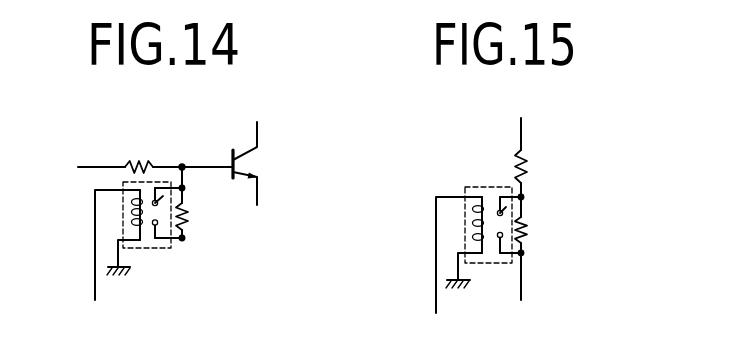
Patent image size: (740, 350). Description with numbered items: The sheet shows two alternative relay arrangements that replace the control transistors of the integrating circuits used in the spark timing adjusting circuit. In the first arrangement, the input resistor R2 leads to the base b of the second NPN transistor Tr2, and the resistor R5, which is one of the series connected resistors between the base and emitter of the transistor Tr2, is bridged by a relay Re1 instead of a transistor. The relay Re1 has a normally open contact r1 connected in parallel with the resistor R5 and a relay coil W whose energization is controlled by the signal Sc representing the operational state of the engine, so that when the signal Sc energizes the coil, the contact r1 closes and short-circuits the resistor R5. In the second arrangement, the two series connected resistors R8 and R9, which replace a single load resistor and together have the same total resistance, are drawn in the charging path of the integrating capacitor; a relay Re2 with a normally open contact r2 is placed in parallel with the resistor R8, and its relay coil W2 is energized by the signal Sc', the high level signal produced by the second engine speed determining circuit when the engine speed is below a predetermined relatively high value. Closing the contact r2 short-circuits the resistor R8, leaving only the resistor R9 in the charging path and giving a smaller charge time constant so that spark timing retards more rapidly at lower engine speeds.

In FIG. 14, the input resistor R2 is at (140, 158).
In FIG. 14, the base b is at (182, 156).
In FIG. 14, the second NPN transistor Tr2 is at (243, 165).
In FIG. 14, the resistor R5 is at (196, 216).
In FIG. 14, the relay coil W is at (142, 212).
In FIG. 14, the normally open contact r1 is at (161, 199).
In FIG. 14, the signal Sc is at (113, 258).
In FIG. 14, the relay Re1 is at (143, 250).
In FIG. 15, the relay Re2 is at (485, 187).
In FIG. 15, the resistor R9 is at (536, 166).
In FIG. 15, the normally open contact r2 is at (505, 211).
In FIG. 15, the resistor R8 is at (536, 230).
In FIG. 15, the relay coil W2 is at (490, 223).
In FIG. 15, the signal Sc' is at (453, 268).